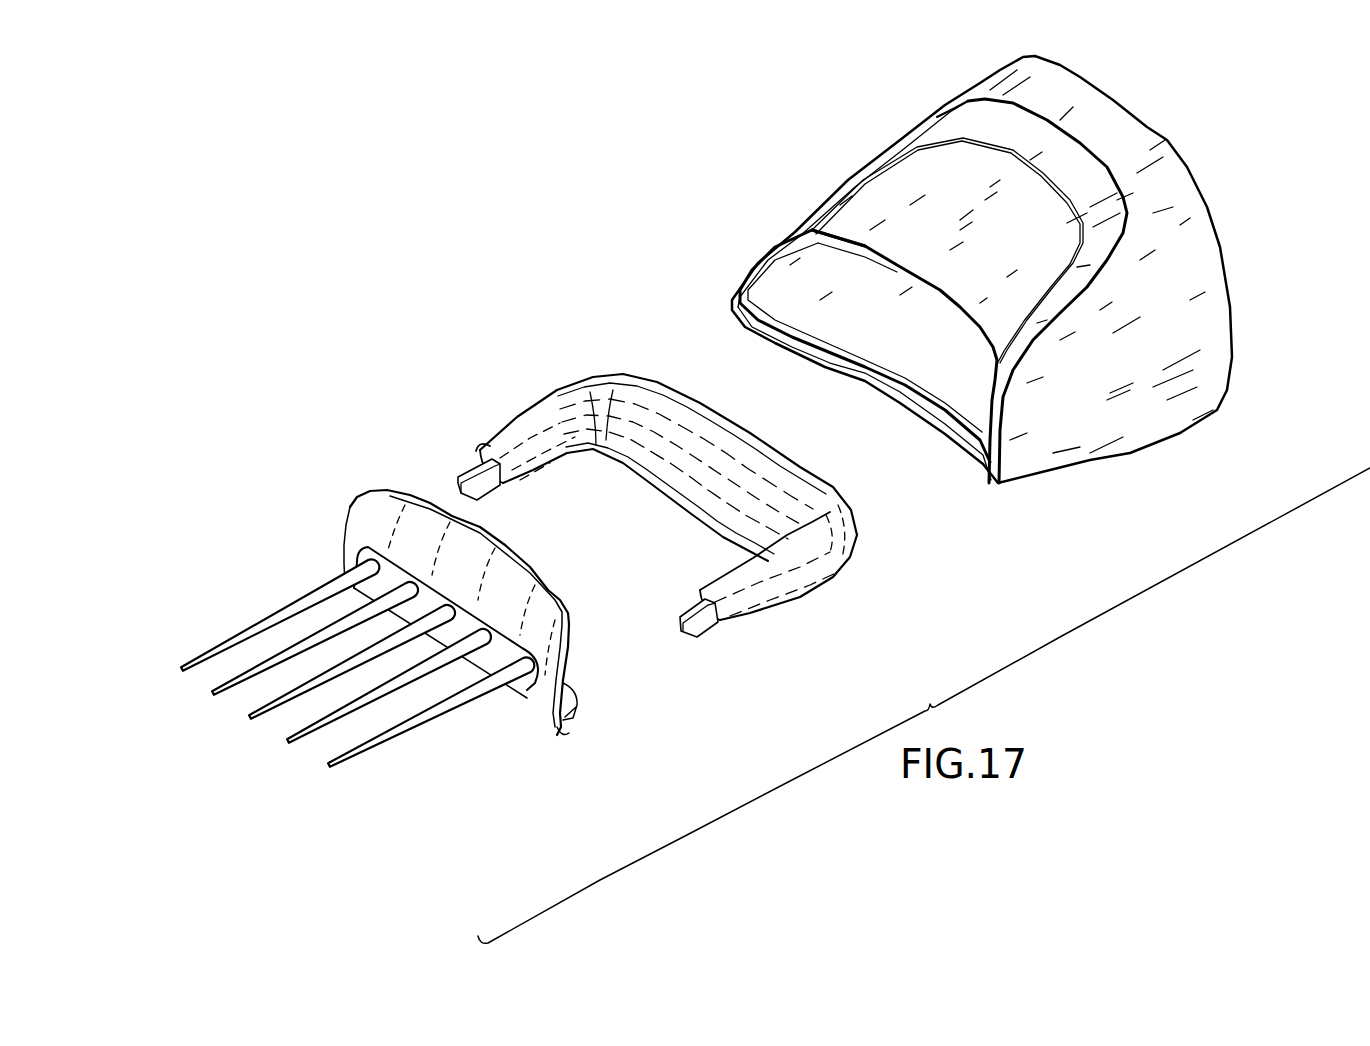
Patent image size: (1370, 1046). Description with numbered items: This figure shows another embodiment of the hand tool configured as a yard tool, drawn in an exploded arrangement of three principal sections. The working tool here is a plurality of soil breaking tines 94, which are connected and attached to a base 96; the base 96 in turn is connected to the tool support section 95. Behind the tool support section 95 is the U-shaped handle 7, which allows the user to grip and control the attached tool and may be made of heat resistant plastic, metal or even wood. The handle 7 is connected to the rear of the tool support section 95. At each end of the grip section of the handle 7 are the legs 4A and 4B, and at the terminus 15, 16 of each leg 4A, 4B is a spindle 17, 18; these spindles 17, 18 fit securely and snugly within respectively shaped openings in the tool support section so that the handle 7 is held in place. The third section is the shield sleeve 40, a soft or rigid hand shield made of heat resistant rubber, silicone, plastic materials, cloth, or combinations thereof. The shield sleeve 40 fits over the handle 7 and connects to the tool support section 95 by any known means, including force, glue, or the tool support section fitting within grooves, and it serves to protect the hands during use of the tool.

The handle 7 is at (680, 373).
The leg 4A is at (790, 590).
The leg 4B is at (547, 410).
The terminus 15 is at (723, 620).
The terminus 16 is at (476, 451).
The spindle 17 is at (680, 613).
The spindle 18 is at (487, 490).
The shield sleeve 40 is at (1120, 407).
The soil breaking tines 94 is at (278, 604).
The tool support section 95 is at (374, 511).
The base 96 is at (357, 550).